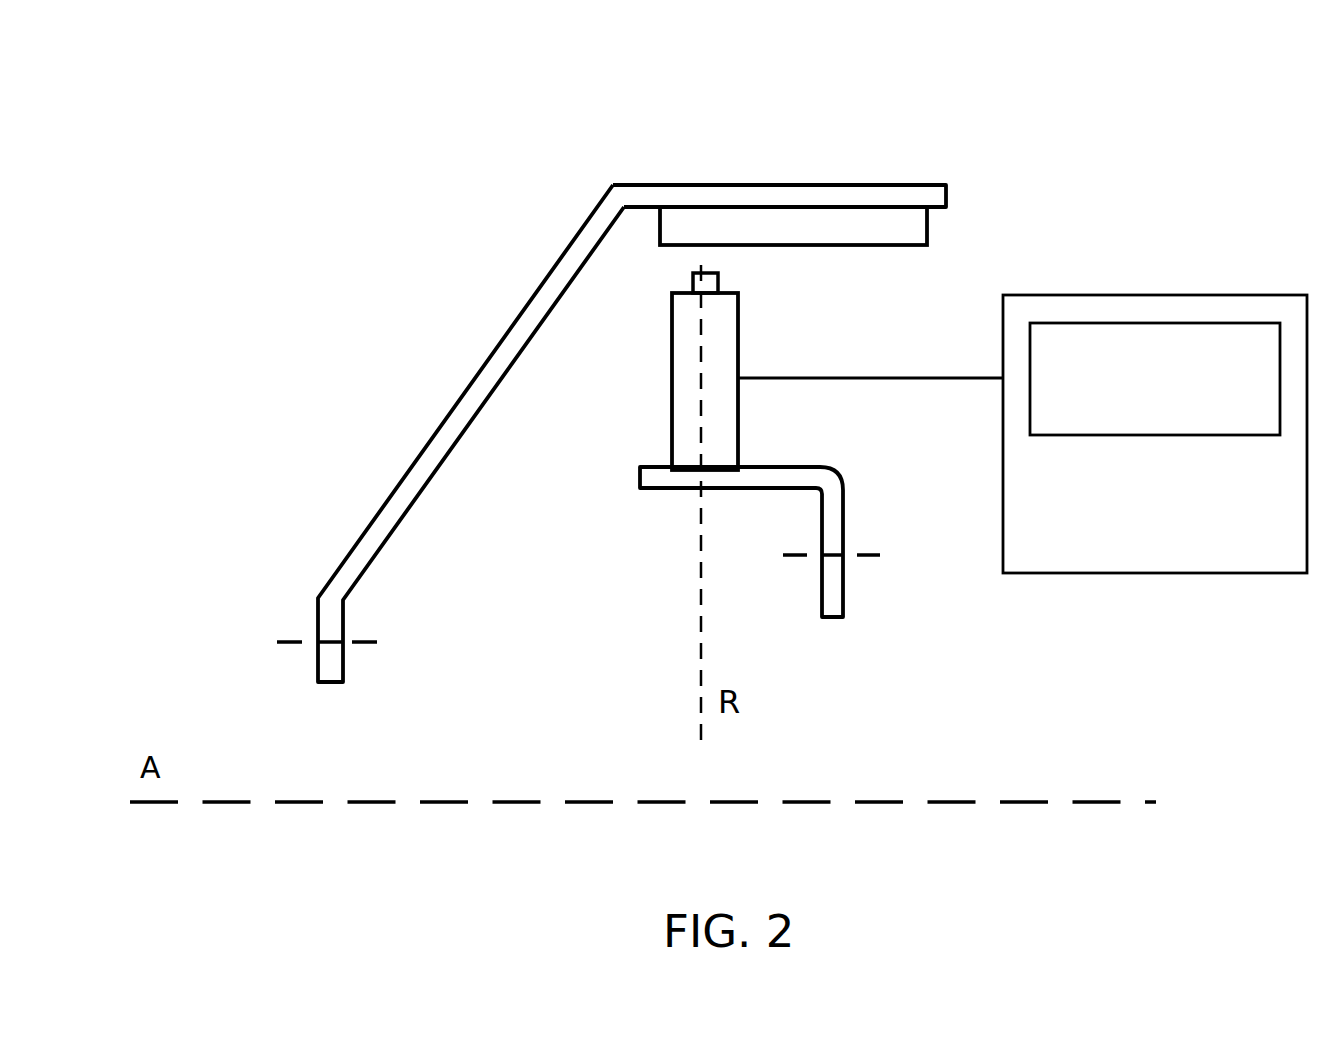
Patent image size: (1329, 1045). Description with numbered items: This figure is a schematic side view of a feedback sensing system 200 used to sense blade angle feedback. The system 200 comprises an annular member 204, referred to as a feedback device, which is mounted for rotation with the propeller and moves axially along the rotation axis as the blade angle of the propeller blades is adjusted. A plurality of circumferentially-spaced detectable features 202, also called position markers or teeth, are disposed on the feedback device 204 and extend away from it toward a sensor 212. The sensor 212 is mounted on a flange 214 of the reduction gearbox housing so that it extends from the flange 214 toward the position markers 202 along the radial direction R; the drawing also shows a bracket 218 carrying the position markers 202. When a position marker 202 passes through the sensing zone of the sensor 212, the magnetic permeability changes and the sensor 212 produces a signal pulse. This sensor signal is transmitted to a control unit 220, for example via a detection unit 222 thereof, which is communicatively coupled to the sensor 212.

The feedback sensing system 200 is at (362, 157).
The detectable features 202 is at (770, 223).
The annular member 204 is at (342, 565).
The sensor 212 is at (670, 360).
The flange 214 is at (648, 473).
The top mounting bar 218 is at (930, 213).
The control unit 220 is at (1127, 556).
The detection unit 222 is at (1127, 414).